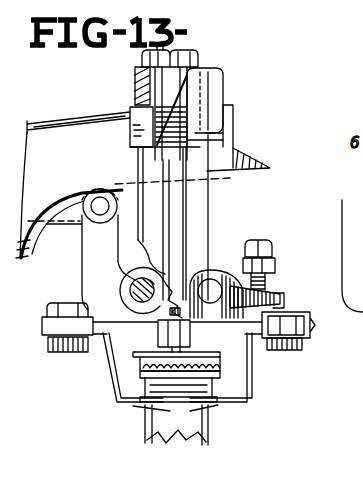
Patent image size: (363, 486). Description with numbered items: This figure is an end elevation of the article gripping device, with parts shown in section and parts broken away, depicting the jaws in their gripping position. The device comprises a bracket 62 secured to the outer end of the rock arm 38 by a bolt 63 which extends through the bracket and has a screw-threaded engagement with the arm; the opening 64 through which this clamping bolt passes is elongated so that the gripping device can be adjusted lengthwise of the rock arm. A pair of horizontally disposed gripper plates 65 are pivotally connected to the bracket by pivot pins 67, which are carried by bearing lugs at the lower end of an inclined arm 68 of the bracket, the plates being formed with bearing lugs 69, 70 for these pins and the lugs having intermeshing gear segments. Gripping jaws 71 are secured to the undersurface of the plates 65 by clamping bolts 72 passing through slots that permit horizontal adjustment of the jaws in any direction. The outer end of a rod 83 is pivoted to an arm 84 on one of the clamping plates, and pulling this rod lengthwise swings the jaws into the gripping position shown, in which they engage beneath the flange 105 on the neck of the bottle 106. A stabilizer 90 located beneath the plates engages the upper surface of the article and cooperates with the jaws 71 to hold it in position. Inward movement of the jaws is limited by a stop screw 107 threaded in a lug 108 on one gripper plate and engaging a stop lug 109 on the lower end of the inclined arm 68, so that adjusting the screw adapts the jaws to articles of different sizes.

The rock arm 38 is at (229, 125).
The bracket 62 is at (217, 88).
The bolt 63 is at (198, 64).
The opening 64 is at (138, 85).
The gripper plates 65 is at (318, 333).
The pivot pins 67 is at (122, 302).
The inclined arm 68 is at (198, 215).
The bearing lug 69 is at (155, 328).
The bearing lug 70 is at (209, 328).
The gripping jaws 71 is at (110, 375).
The clamping bolts 72 is at (62, 355).
The rod 83 is at (73, 185).
The arm 84 is at (85, 255).
The stabilizer 90 is at (223, 363).
The flange 105 is at (190, 406).
The bottle 106 is at (152, 428).
The stop screw 107 is at (267, 248).
The lug 108 is at (276, 266).
The stop lug 109 is at (280, 296).